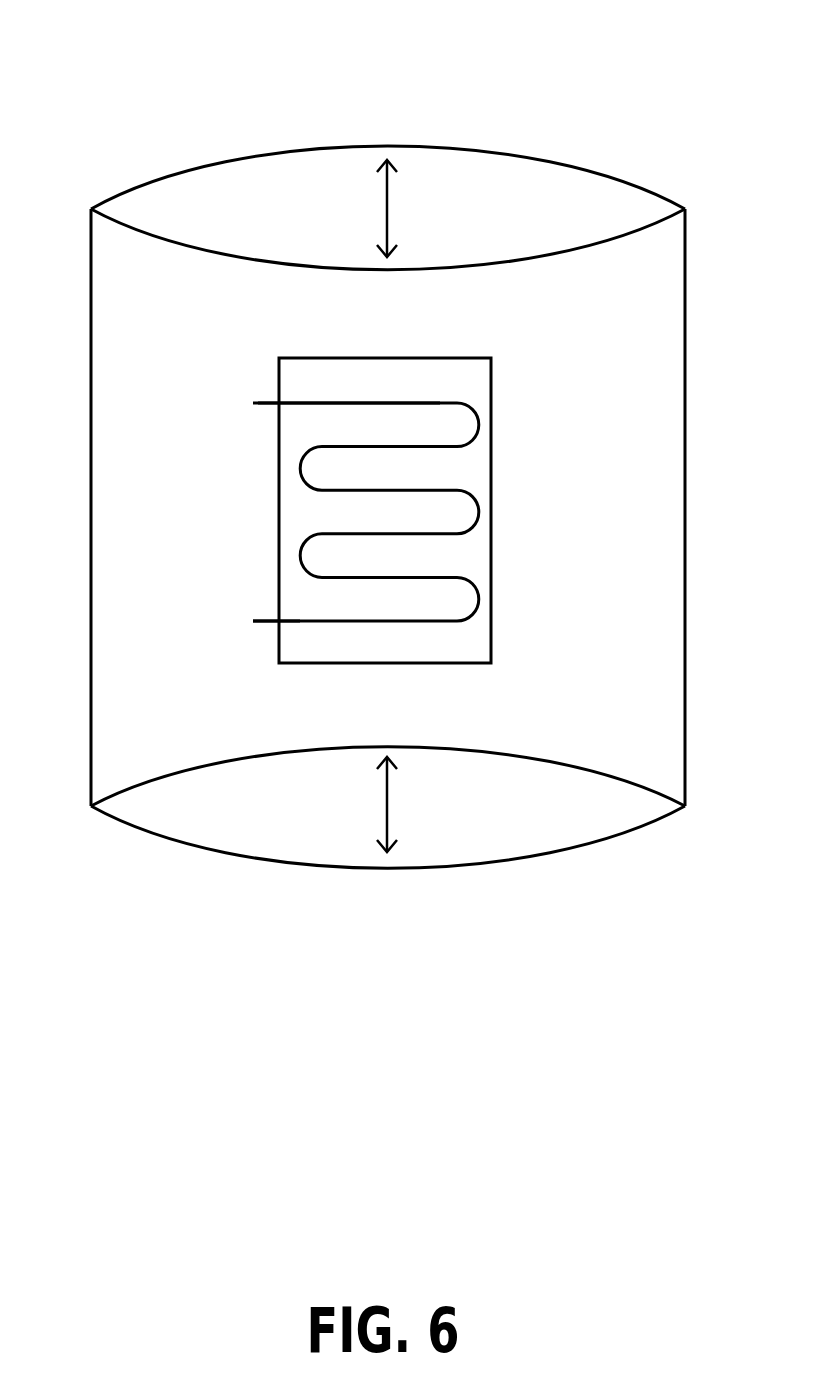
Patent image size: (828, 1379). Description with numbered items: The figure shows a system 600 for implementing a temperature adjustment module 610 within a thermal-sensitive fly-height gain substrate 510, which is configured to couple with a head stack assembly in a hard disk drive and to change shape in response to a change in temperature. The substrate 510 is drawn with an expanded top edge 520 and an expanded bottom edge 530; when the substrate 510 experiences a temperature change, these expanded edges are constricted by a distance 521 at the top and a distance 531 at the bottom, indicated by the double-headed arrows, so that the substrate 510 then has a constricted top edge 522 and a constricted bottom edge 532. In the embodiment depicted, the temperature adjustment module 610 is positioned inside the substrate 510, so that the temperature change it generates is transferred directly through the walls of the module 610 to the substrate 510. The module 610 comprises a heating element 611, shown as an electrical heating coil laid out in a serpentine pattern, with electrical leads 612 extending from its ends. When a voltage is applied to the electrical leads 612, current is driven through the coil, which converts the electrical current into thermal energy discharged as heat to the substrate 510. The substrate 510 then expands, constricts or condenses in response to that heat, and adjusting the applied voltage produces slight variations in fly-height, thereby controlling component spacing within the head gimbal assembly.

The system 600 is at (410, 31).
The thermal-sensitive fly-height gain substrate 510 is at (557, 497).
The expanded top edge 520 is at (190, 172).
The distance 521 is at (388, 215).
The constricted top edge 522 is at (587, 243).
The expanded bottom edge 530 is at (620, 827).
The distance 531 is at (388, 808).
The constricted bottom edge 532 is at (193, 777).
The temperature adjustment module 610 is at (491, 605).
The heating element 611 is at (430, 403).
The electrical leads 612 is at (268, 403).